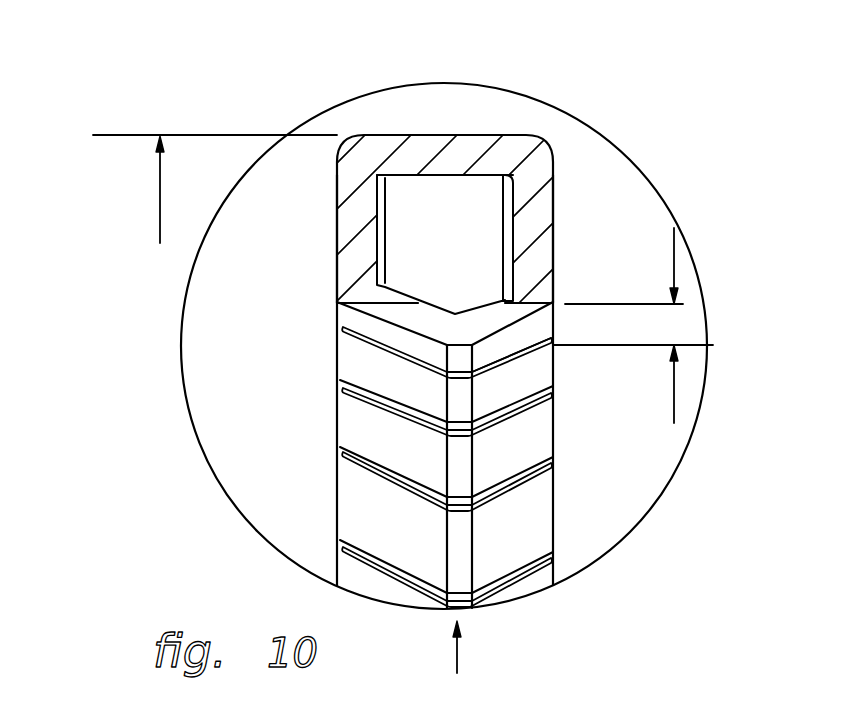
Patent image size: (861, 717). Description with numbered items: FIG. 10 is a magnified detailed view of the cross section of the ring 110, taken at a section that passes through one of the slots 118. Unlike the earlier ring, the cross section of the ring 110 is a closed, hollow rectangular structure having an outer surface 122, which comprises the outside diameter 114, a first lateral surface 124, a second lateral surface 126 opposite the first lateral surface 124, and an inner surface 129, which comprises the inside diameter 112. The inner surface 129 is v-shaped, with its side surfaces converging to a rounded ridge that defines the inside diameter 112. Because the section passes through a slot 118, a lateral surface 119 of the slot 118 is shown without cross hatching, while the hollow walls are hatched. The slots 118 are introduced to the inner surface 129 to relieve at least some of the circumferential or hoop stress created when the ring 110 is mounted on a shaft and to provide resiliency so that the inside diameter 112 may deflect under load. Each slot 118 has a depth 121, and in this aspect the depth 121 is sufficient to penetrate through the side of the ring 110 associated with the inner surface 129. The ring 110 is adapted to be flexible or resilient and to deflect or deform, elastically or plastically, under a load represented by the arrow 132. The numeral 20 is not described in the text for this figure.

The ring 110 is at (247, 116).
The cap body 20 is at (363, 163).
The outer surface 122 is at (410, 134).
The first lateral surface 124 is at (336, 202).
The second lateral surface 126 is at (555, 247).
The lateral surface of slot 119 is at (418, 315).
The indentation 118 is at (340, 327).
The inner surface 129 is at (520, 381).
The outside diameter 114 is at (160, 192).
The depth 121 is at (675, 258).
The inside diameter 112 is at (672, 397).
The arrow 132 is at (460, 655).